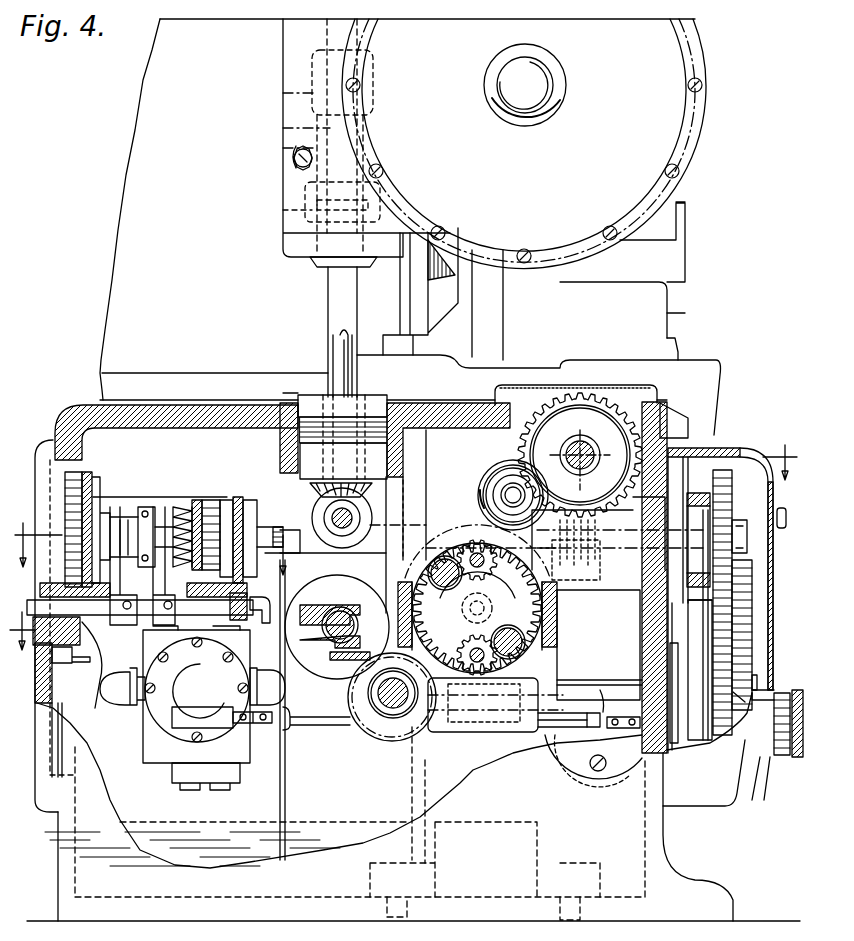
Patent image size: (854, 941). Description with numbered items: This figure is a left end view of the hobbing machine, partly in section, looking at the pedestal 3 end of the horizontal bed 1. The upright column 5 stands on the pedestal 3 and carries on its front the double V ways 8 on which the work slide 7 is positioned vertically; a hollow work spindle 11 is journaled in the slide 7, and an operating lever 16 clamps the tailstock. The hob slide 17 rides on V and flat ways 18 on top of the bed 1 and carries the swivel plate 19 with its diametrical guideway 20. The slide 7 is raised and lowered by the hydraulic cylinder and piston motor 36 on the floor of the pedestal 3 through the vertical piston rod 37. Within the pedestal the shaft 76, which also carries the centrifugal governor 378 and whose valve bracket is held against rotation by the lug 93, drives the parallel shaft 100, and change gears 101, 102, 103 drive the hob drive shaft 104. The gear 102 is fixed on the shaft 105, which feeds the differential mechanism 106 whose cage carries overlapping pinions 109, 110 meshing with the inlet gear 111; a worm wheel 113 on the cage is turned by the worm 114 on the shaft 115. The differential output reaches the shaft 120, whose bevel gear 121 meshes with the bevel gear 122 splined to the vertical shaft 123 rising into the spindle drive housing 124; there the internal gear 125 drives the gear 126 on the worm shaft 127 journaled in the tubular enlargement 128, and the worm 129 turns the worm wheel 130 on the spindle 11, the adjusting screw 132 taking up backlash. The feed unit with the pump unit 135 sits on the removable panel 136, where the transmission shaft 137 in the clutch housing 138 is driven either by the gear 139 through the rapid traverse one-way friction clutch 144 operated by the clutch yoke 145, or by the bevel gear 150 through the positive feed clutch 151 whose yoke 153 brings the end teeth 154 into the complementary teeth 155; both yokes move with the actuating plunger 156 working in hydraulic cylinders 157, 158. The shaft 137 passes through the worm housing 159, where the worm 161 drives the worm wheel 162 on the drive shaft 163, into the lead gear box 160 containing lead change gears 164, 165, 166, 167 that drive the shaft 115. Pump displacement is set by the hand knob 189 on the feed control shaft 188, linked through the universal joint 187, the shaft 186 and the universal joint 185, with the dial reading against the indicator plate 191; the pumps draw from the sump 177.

The horizontal bed 1 is at (62, 845).
The end pedestal 3 is at (84, 413).
The upright column 5 is at (125, 242).
The work slide 7 is at (403, 562).
The double V ways 8 is at (437, 290).
The work spindle 11 is at (157, 539).
The operating lever 16 is at (576, 380).
The hob slide 17 is at (718, 363).
The V and flat ways 18 is at (672, 412).
The swivel plate 19 is at (660, 324).
The diametrical guideway 20 is at (685, 290).
The hydraulic cylinder and piston motor 36 is at (545, 835).
The vertical piston rod 37 is at (490, 312).
The coaxial shaft 76 is at (284, 670).
The lug 93 is at (392, 582).
The parallel shaft 100 is at (380, 697).
The change gear 101 is at (396, 736).
The intermediate change gear 102 is at (465, 532).
The change gear 103 is at (500, 500).
The hob drive shaft 104 is at (506, 494).
The shaft 105 is at (462, 635).
The differential mechanism 106 is at (417, 538).
The pinion 109 is at (484, 607).
The pinion 110 is at (490, 570).
The inlet gear 111 is at (490, 602).
The worm wheel 113 is at (556, 640).
The worm 114 is at (481, 718).
The shaft 115 is at (592, 683).
The shaft 120 is at (338, 518).
The bevel gear 121 is at (322, 510).
The bevel gear 122 is at (313, 486).
The vertical shaft 123 is at (334, 300).
The spindle drive housing 124 is at (697, 118).
The internal gear 125 is at (302, 188).
The gear 126 is at (300, 211).
The worm shaft 127 is at (284, 129).
The tubular enlargement 128 is at (290, 230).
The worm 129 is at (290, 98).
The worm wheel 130 is at (382, 140).
The adjusting screw 132 is at (294, 159).
The pump unit 135 is at (160, 708).
The removable panel 136 is at (55, 440).
The transmission shaft 137 is at (283, 576).
The clutch housing 138 is at (256, 498).
The gear 139 is at (95, 485).
The rapid traverse one-way friction clutch 144 is at (96, 502).
The clutch yoke 145 is at (82, 624).
The bevel gear 150 is at (212, 500).
The positive feed clutch 151 is at (185, 502).
The yoke 153 is at (158, 597).
The end teeth 154 is at (178, 500).
The complementary teeth 155 is at (197, 500).
The actuating plunger 156 is at (90, 648).
The hydraulic cylinder 157 is at (98, 695).
The hydraulic cylinder 158 is at (198, 592).
The worm housing 159 is at (622, 566).
The lead gear box 160 is at (726, 448).
The worm 161 is at (590, 583).
The worm wheel 162 is at (606, 510).
The drive shaft 163 is at (580, 440).
The lead change gear 164 is at (732, 482).
The lead change gear 165 is at (742, 596).
The lead change gear 166 is at (748, 640).
The lead change gear 167 is at (756, 684).
The sump 177 is at (350, 830).
The universal joint 185 is at (283, 738).
The shaft 186 is at (576, 760).
The universal joint 187 is at (591, 713).
The feed control shaft 188 is at (606, 700).
The hand knob 189 is at (798, 758).
The indicator plate 191 is at (768, 775).
The centrifugal governor 378 is at (336, 582).